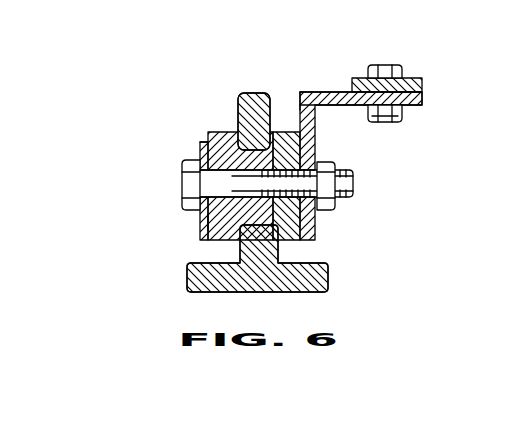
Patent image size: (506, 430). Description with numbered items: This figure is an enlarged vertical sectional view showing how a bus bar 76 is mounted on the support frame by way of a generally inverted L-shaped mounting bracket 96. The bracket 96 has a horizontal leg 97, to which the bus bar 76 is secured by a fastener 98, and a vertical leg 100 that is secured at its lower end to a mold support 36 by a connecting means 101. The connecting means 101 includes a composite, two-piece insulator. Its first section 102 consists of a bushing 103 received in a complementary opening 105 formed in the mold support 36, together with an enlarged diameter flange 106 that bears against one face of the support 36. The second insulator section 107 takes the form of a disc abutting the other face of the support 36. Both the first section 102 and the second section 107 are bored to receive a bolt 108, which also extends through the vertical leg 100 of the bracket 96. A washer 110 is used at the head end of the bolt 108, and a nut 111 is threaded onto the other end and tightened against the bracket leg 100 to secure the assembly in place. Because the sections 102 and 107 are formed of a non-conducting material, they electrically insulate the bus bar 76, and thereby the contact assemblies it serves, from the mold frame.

The mold support 36 is at (245, 97).
The bus bar 76 is at (413, 78).
The mounting bracket 96 is at (311, 80).
The horizontal leg 97 is at (338, 92).
The fastener 98 is at (385, 64).
The vertical leg 100 is at (316, 138).
The connecting means 101 is at (182, 113).
The first insulator section 102 is at (205, 172).
The bushing 103 is at (281, 250).
The opening 105 is at (252, 148).
The flange 106 is at (208, 214).
The second insulator section 107 is at (287, 132).
The bolt 108 is at (182, 184).
The washer 110 is at (204, 152).
The nut 111 is at (337, 206).